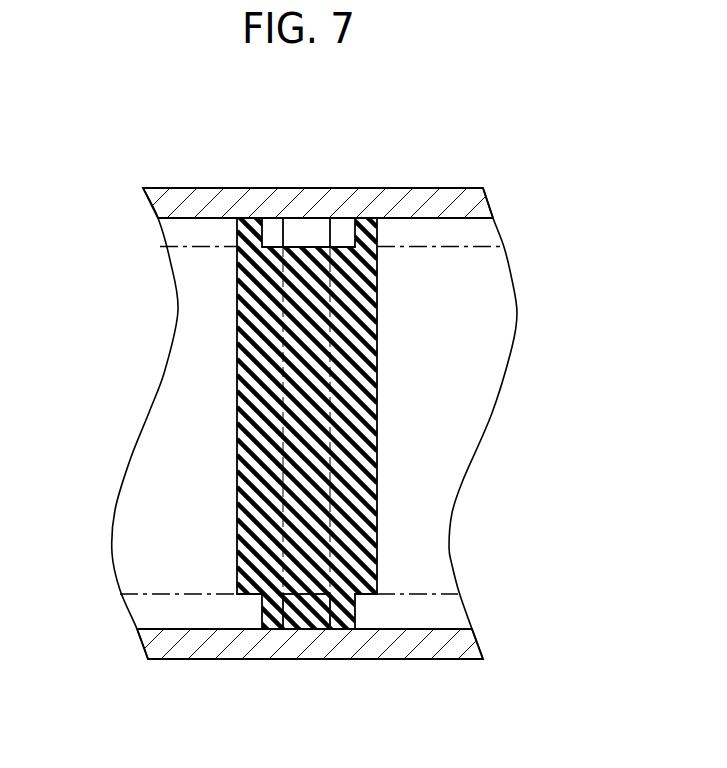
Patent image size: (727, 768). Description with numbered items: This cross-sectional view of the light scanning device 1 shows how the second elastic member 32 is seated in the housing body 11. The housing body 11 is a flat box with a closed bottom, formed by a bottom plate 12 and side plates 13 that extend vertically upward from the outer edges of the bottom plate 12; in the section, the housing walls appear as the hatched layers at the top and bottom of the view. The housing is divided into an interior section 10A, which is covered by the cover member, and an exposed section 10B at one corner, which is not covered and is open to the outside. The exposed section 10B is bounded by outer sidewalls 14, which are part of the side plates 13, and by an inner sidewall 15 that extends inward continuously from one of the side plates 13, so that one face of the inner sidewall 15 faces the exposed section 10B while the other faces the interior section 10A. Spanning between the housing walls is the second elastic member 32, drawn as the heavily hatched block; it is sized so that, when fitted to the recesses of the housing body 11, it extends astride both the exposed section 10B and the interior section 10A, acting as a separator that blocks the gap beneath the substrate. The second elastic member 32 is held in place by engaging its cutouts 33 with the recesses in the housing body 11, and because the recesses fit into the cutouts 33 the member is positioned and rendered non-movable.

The light scanning device 1 is at (278, 173).
The interior section 10A is at (453, 428).
The exposed section 10B is at (217, 428).
The housing body 11 is at (385, 181).
The bottom plate 12 is at (420, 612).
The side plates 13 is at (455, 194).
The outer sidewalls 14 is at (169, 188).
The inner sidewall 15 is at (182, 652).
The second elastic member 32 is at (237, 258).
The cutouts 33 is at (309, 240).